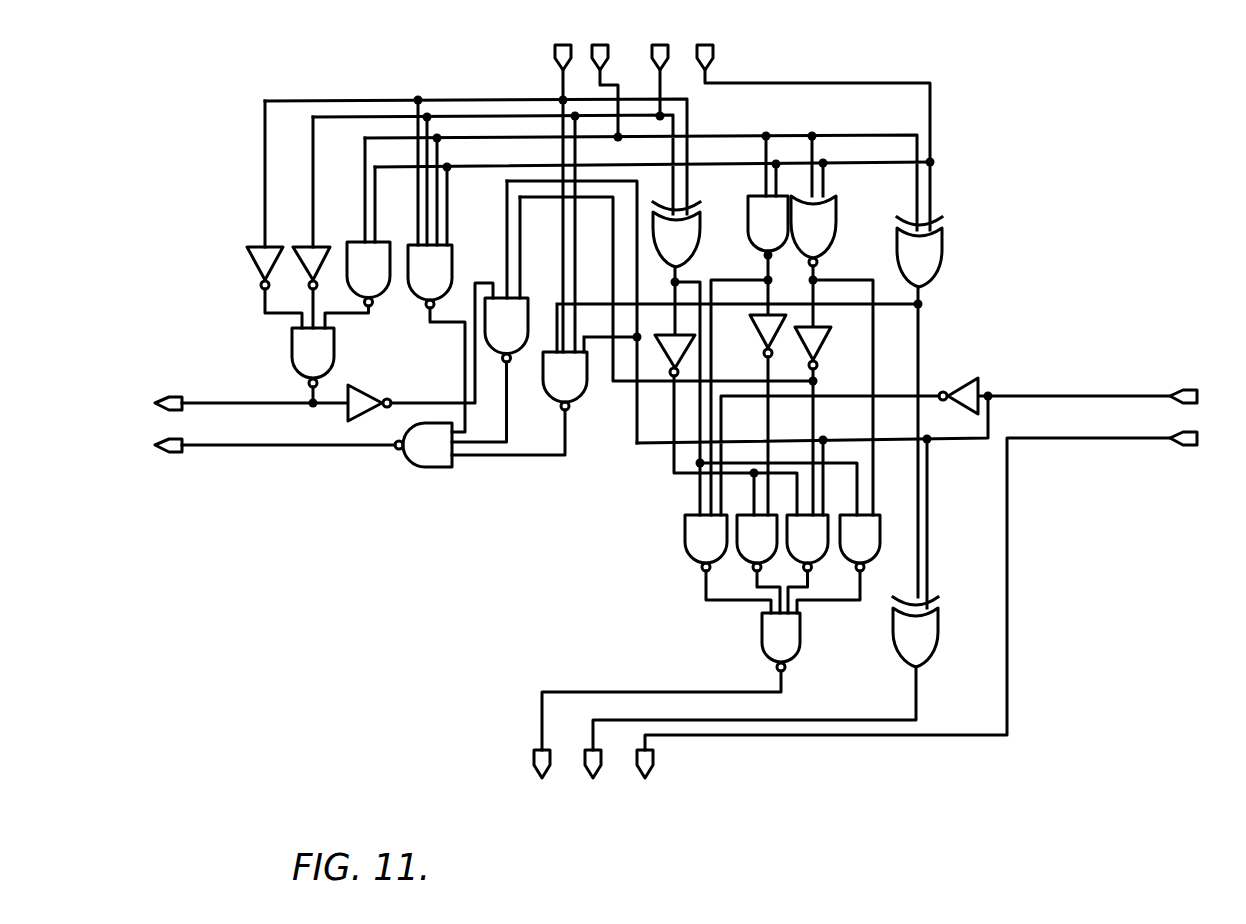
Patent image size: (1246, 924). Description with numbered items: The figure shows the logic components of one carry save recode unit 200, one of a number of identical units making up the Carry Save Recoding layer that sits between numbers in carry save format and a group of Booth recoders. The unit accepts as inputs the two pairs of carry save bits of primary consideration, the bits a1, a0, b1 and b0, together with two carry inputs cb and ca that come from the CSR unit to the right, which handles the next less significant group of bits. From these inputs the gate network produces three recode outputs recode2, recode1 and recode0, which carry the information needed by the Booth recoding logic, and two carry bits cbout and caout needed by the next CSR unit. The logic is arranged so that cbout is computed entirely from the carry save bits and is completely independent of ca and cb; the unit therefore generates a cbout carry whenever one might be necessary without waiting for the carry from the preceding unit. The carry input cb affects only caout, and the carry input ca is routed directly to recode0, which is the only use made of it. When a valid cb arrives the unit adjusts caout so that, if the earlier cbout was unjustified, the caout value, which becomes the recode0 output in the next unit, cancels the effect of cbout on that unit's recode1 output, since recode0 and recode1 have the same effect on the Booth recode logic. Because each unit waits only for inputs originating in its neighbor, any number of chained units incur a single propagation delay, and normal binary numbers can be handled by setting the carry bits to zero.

The carry save recode unit 200 is at (667, 431).
The carry save input bit a1 is at (563, 42).
The carry save input bit a0 is at (600, 42).
The carry save input bit b1 is at (660, 42).
The carry save input bit b0 is at (705, 42).
The carry input Cb cb is at (1200, 397).
The carry input Ca ca is at (1200, 439).
The carry output Cbout cbout is at (142, 403).
The carry output Caout caout is at (142, 445).
The recode output r2 recode2 is at (546, 799).
The recode output r1 recode1 is at (597, 799).
The recode output r0 recode0 is at (649, 799).